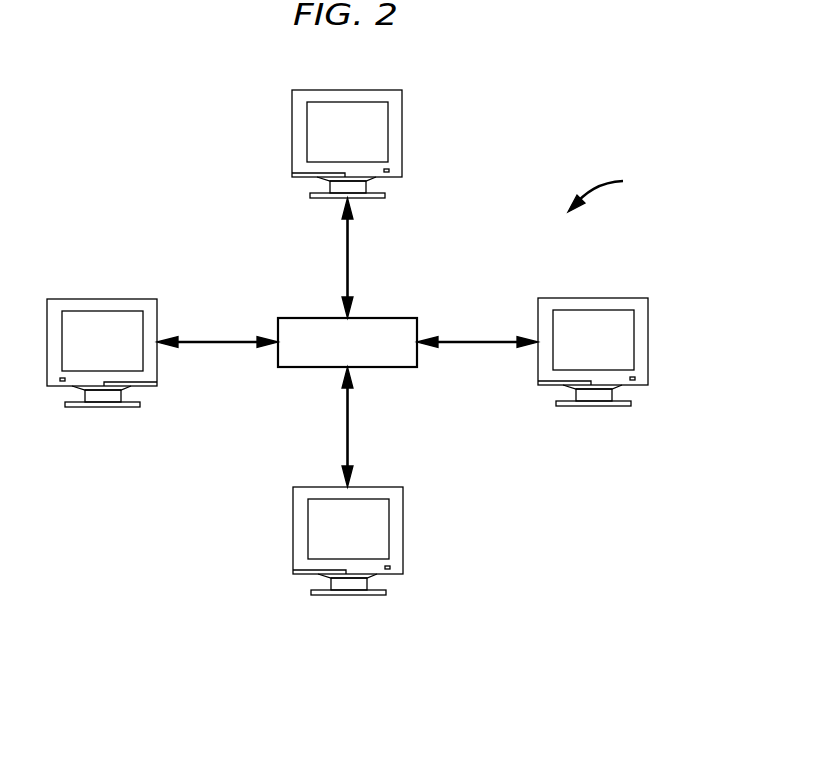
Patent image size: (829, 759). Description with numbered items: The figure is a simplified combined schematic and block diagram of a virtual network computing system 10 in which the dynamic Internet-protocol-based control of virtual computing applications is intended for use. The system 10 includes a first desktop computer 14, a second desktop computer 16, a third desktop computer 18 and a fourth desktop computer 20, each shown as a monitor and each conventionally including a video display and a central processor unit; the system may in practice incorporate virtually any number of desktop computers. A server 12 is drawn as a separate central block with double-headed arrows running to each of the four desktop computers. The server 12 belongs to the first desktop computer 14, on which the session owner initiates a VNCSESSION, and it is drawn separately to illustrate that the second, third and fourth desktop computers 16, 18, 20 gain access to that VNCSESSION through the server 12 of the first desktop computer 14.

The virtual network computing system 10 is at (609, 189).
The server 12 is at (418, 325).
The first desktop computer 14 is at (648, 322).
The second desktop computer 16 is at (402, 120).
The third desktop computer 18 is at (157, 315).
The fourth desktop computer 20 is at (403, 513).